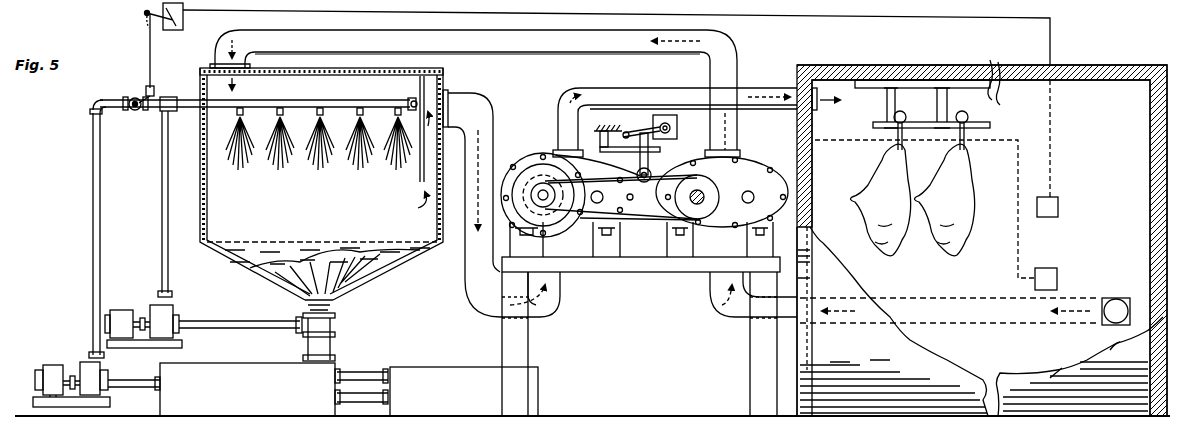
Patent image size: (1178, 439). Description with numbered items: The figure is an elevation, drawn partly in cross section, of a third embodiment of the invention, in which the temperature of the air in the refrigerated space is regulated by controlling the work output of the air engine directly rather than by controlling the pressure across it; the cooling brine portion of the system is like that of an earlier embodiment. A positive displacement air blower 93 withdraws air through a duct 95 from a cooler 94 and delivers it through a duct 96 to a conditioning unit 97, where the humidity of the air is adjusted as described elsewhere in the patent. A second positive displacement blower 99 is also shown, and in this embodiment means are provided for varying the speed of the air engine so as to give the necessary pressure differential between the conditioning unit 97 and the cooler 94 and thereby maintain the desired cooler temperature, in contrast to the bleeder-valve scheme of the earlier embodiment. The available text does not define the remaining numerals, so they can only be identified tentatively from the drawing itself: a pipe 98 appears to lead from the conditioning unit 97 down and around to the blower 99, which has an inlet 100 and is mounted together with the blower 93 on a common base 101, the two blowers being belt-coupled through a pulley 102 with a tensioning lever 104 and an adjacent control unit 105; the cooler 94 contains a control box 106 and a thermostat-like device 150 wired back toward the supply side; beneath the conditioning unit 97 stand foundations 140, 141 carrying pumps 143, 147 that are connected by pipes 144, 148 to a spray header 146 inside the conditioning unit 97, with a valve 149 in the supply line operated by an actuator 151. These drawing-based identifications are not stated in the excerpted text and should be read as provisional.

The positive displacement air blower 93 is at (753, 177).
The cooler 94 is at (1090, 113).
The duct 95 is at (723, 318).
The duct 96 is at (488, 40).
The conditioning unit 97 is at (257, 232).
The pipe 98 is at (467, 260).
The positive displacement blower 99 is at (553, 157).
The blower inlet 100 is at (527, 155).
The base frame 101 is at (641, 319).
The pulley 102 is at (710, 186).
The belt tensioning lever 104 is at (652, 158).
The control unit 105 is at (677, 124).
The control box 106 is at (1057, 272).
The foundation 140 is at (266, 374).
The foundation 141 is at (457, 368).
The pump 143 is at (97, 409).
The pipe 144 is at (93, 197).
The spray header 146 is at (303, 101).
The pump 147 is at (180, 347).
The pipe 148 is at (167, 183).
The valve 149 is at (136, 111).
The thermostat 150 is at (1058, 205).
The valve actuator 151 is at (164, 31).